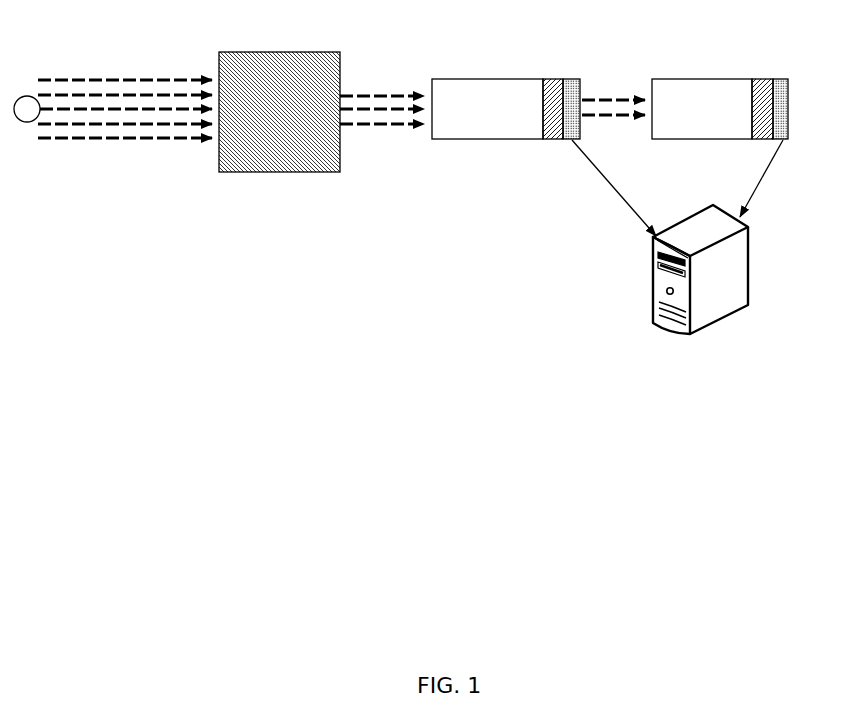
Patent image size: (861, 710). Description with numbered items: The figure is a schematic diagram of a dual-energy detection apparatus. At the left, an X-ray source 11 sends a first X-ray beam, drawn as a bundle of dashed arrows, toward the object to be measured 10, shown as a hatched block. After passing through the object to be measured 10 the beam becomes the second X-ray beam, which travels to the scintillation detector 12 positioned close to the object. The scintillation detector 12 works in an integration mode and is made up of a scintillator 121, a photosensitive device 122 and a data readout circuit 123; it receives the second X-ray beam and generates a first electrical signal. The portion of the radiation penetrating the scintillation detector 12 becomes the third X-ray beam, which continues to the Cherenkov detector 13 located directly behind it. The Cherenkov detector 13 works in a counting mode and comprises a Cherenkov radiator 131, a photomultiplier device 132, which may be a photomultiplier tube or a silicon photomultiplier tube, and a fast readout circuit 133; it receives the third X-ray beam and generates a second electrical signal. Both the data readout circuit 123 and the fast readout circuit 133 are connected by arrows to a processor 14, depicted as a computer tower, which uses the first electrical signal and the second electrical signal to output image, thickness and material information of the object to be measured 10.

The object to be measured 10 is at (288, 90).
The X-ray source 11 is at (113, 87).
The scintillation detector 12 is at (527, 101).
The scintillator 121 is at (476, 128).
The photosensitive device 122 is at (521, 128).
The data readout circuit 123 is at (604, 93).
The Cherenkov detector 13 is at (733, 101).
The Cherenkov radiator 131 is at (689, 128).
The photomultiplier device 132 is at (733, 128).
The fast readout circuit 133 is at (806, 96).
The processor 14 is at (748, 269).